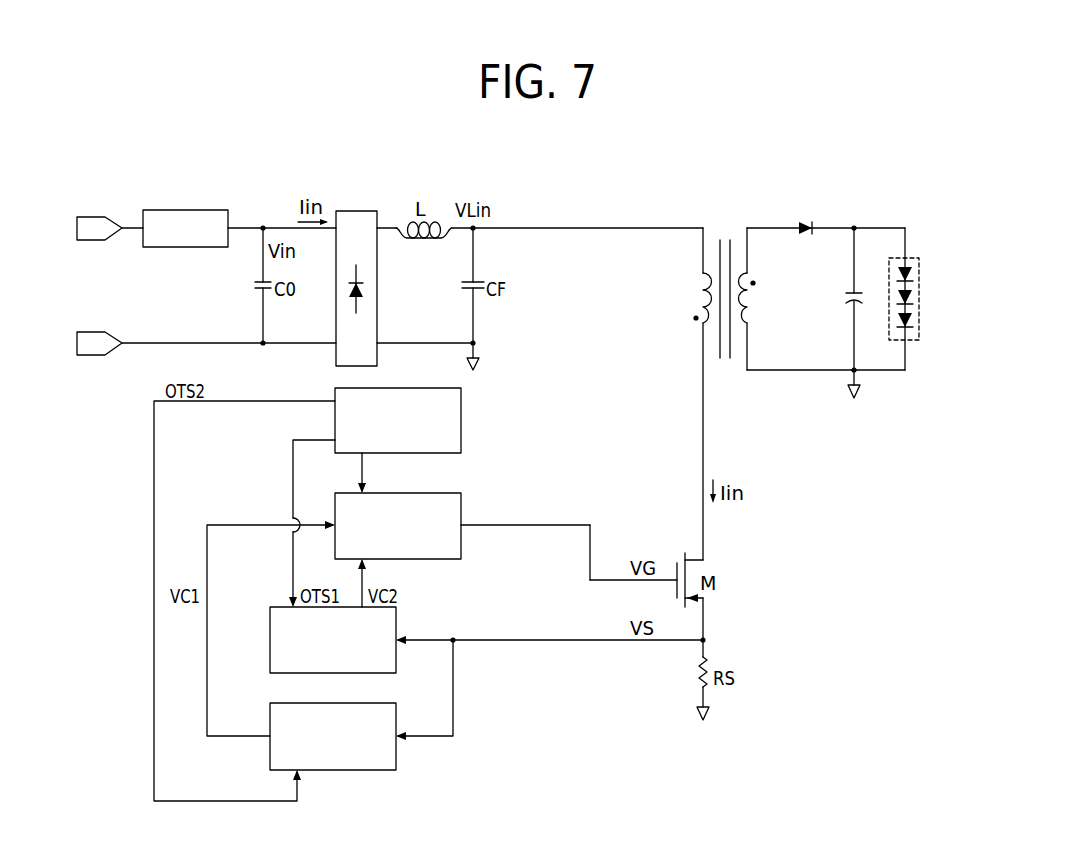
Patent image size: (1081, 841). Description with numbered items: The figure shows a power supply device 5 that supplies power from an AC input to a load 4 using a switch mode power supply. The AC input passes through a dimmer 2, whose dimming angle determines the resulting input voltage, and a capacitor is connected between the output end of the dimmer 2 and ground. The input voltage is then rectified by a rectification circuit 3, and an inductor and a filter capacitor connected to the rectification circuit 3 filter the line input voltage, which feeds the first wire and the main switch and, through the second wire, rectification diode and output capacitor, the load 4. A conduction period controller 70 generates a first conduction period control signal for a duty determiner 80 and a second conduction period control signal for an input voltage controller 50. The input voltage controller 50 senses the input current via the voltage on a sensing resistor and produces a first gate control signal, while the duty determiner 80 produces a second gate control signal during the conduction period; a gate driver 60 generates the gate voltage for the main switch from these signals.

The dimmer 2 is at (198, 210).
The rectification circuit 3 is at (360, 211).
The load 4 is at (919, 297).
The power supply device 5 is at (669, 157).
The input voltage controller 50 is at (270, 760).
The gate driver 60 is at (461, 503).
The conduction period controller 70 is at (461, 422).
The duty determiner 80 is at (270, 640).